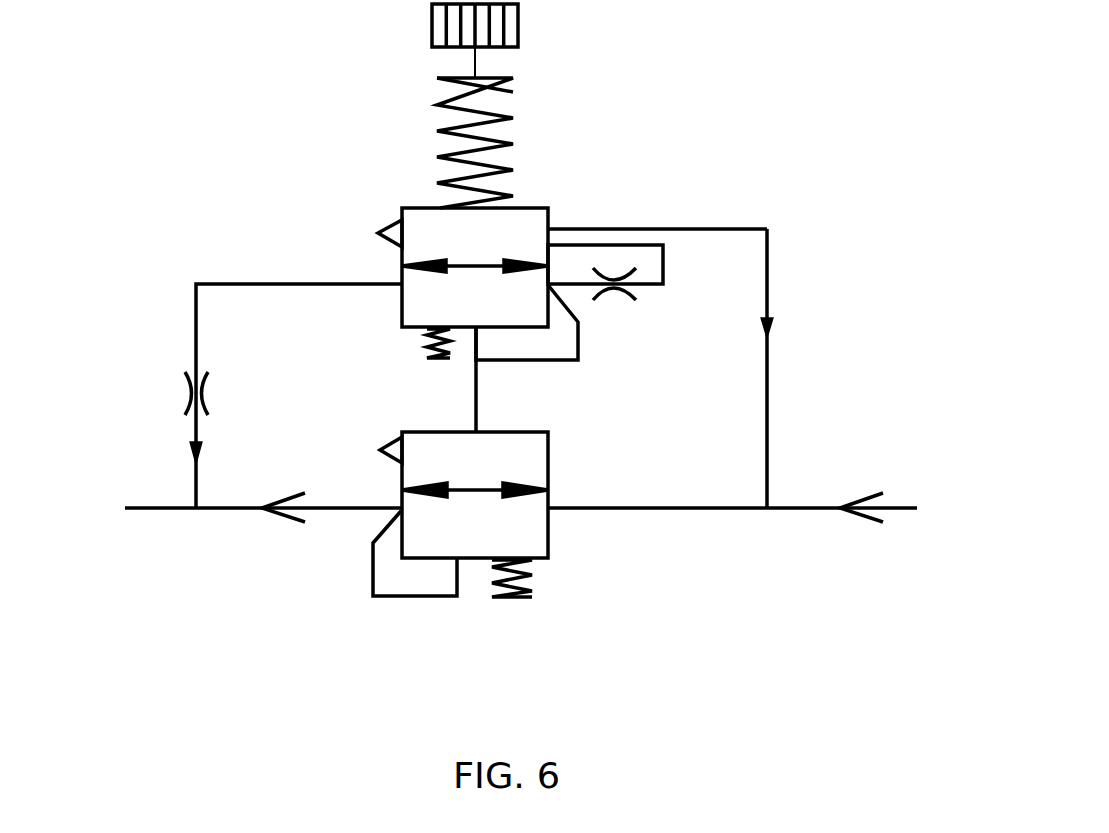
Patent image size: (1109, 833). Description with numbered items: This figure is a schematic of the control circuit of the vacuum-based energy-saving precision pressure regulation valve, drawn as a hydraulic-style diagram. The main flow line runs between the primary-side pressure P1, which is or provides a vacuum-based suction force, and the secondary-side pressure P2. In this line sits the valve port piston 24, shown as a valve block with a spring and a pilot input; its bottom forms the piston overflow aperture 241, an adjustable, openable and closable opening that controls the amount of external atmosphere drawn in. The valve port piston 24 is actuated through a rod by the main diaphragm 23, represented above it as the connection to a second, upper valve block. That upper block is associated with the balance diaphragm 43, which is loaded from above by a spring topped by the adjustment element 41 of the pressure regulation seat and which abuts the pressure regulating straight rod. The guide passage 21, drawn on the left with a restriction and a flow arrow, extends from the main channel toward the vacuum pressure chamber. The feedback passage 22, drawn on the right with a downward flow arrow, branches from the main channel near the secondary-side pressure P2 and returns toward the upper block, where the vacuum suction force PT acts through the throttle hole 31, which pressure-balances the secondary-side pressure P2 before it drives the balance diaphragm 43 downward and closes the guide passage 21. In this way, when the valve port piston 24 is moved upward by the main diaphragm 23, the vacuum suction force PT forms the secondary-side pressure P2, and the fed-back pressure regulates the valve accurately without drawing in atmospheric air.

The adjustment knob 41 is at (432, 6).
The balance diaphragm 43 is at (612, 229).
The vacuum suction force PT is at (663, 262).
The throttle hole 31 is at (613, 299).
The feedback passage 22 is at (770, 358).
The guide passage 21 is at (196, 343).
The primary-side pressure P1 is at (246, 509).
The secondary-side pressure P2 is at (754, 509).
The main diaphragm 23 is at (472, 412).
The valve port piston 24 is at (541, 560).
The piston overflow aperture 241 is at (415, 598).